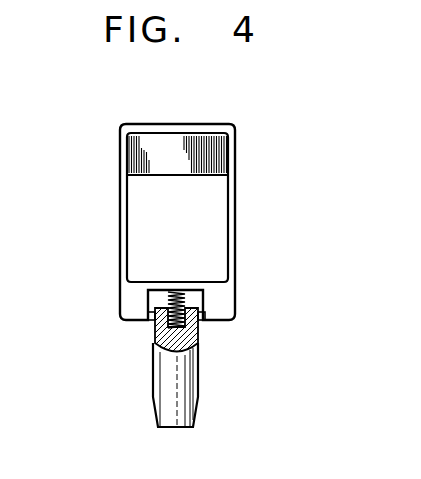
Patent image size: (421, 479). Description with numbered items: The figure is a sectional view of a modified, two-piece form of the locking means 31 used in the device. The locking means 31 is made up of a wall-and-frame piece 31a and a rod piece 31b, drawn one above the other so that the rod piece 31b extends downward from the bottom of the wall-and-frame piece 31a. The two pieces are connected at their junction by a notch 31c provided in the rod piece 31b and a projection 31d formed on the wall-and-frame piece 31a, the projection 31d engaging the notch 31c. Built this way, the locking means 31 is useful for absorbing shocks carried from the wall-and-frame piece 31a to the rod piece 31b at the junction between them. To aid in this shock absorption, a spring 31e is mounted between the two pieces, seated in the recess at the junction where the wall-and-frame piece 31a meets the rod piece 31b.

The locking means 31 is at (121, 218).
The wall-and-frame piece 31a is at (233, 252).
The rod piece 31b is at (197, 372).
The notch 31c is at (200, 326).
The projection 31d is at (150, 322).
The spring 31e is at (184, 298).